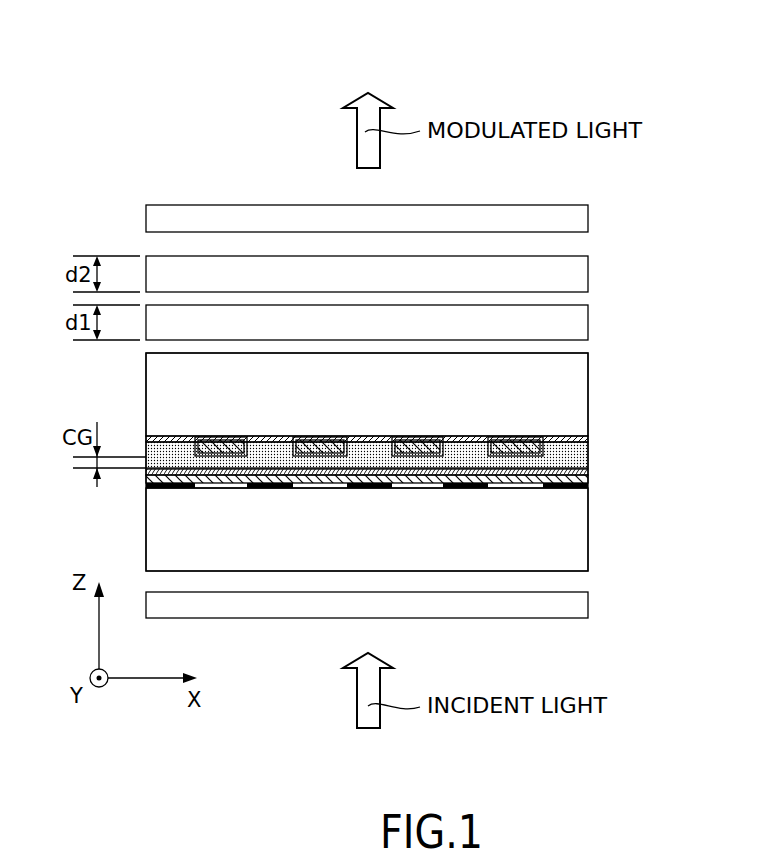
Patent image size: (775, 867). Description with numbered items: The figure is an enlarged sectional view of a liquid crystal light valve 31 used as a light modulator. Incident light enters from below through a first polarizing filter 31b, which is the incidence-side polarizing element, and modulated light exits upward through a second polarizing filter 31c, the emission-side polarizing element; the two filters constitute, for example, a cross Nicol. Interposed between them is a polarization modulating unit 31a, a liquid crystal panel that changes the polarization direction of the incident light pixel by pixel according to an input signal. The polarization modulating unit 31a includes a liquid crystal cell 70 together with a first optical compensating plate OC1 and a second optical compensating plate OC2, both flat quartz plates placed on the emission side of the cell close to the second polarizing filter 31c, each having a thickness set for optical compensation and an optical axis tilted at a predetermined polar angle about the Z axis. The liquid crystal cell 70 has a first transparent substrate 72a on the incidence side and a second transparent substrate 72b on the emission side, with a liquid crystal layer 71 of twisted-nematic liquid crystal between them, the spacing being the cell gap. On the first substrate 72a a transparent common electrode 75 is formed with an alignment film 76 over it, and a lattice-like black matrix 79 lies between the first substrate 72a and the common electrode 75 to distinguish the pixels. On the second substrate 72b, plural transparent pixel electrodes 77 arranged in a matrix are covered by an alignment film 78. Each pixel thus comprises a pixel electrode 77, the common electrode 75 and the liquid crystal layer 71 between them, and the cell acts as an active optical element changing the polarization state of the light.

The liquid crystal light valve 31 is at (661, 80).
The polarization modulating unit 31a is at (118, 403).
The first polarizing filter 31b is at (540, 608).
The second polarizing filter 31c is at (536, 215).
The first optical compensating plate OC1 is at (588, 322).
The second optical compensating plate OC2 is at (588, 272).
The liquid crystal cell 70 is at (686, 456).
The liquid crystal layer 71 is at (590, 455).
The first transparent substrate 72a is at (580, 552).
The second transparent substrate 72b is at (577, 374).
The common electrode 75 is at (590, 478).
The alignment film 76 is at (590, 471).
The pixel electrode 77 is at (516, 437).
The alignment film 78 is at (322, 437).
The black matrix 79 is at (575, 487).